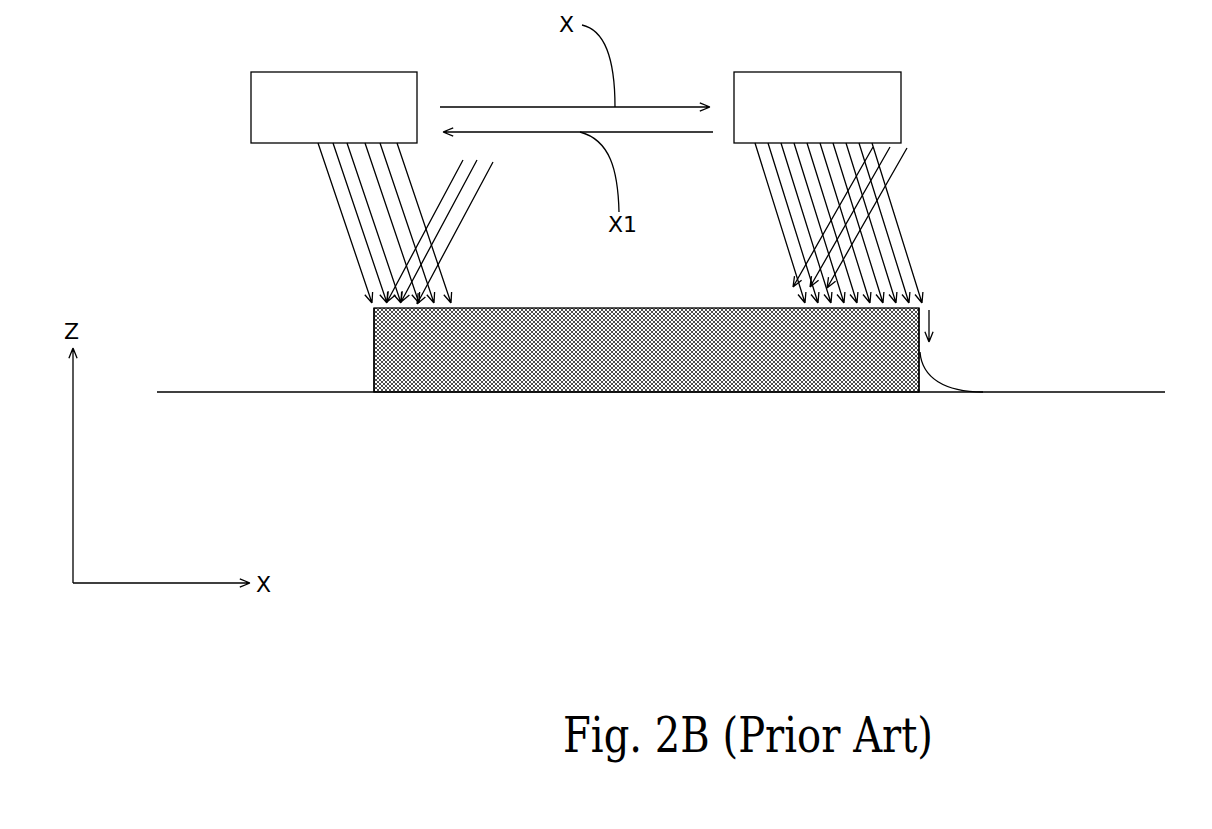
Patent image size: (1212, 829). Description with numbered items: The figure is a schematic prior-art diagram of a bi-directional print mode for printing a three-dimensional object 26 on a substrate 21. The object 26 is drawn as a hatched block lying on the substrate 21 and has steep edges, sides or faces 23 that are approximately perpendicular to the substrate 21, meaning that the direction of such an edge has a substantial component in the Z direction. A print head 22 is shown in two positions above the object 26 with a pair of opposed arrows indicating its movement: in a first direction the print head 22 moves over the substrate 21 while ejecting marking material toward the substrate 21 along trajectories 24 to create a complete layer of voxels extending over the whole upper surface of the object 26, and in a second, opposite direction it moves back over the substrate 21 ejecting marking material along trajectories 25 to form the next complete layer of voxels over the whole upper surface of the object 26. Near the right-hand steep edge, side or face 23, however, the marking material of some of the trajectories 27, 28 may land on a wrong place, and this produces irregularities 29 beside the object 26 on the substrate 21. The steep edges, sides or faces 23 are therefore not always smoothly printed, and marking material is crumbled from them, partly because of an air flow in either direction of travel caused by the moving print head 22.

The substrate 21 is at (240, 392).
The print head 22 is at (275, 99).
The steep edges, sides or faces 23 is at (373, 370).
The trajectories 24 is at (353, 242).
The trajectories 25 is at (462, 227).
The object 26 is at (640, 320).
The trajectories 27 is at (905, 260).
The trajectories 28 is at (930, 320).
The irregularities 29 is at (928, 382).